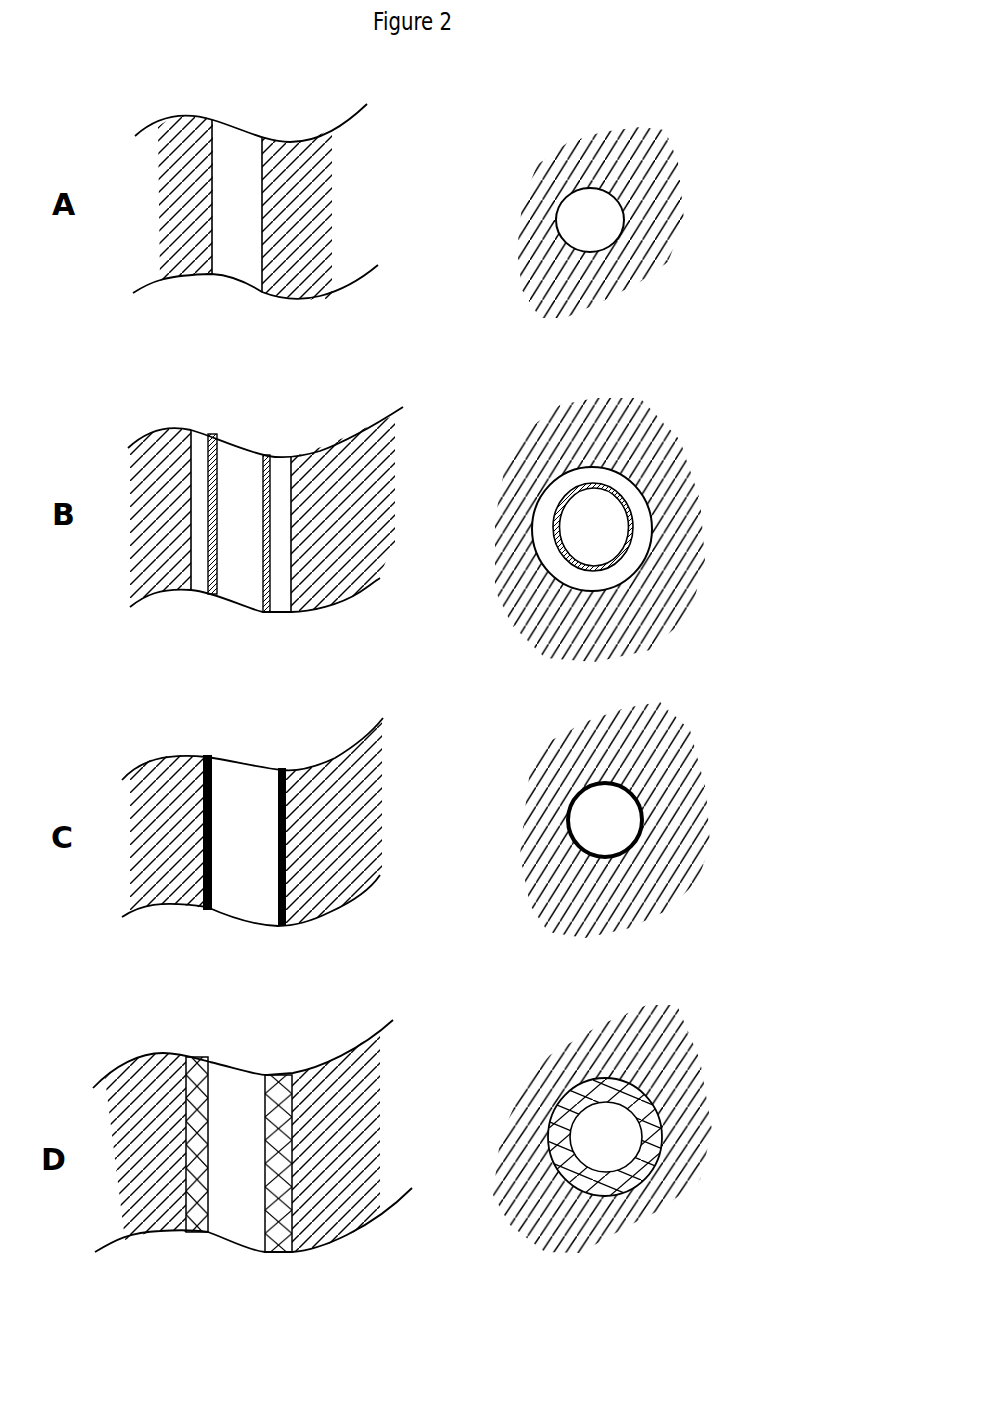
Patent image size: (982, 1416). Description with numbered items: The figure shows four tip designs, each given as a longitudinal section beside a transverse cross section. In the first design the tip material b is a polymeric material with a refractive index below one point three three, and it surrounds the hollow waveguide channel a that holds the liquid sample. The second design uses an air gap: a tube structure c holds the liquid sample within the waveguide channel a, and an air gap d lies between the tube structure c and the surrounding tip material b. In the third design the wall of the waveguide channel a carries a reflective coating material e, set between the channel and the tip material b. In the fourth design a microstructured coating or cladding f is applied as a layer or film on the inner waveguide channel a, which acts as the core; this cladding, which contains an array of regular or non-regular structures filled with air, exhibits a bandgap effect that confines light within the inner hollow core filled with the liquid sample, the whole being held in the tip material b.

The waveguide channel a is at (596, 211).
The tip material b is at (547, 246).
The tube structure c is at (557, 535).
The air gap d is at (552, 562).
The reflective coating material e is at (597, 860).
The microstructured coating or cladding f is at (571, 1166).